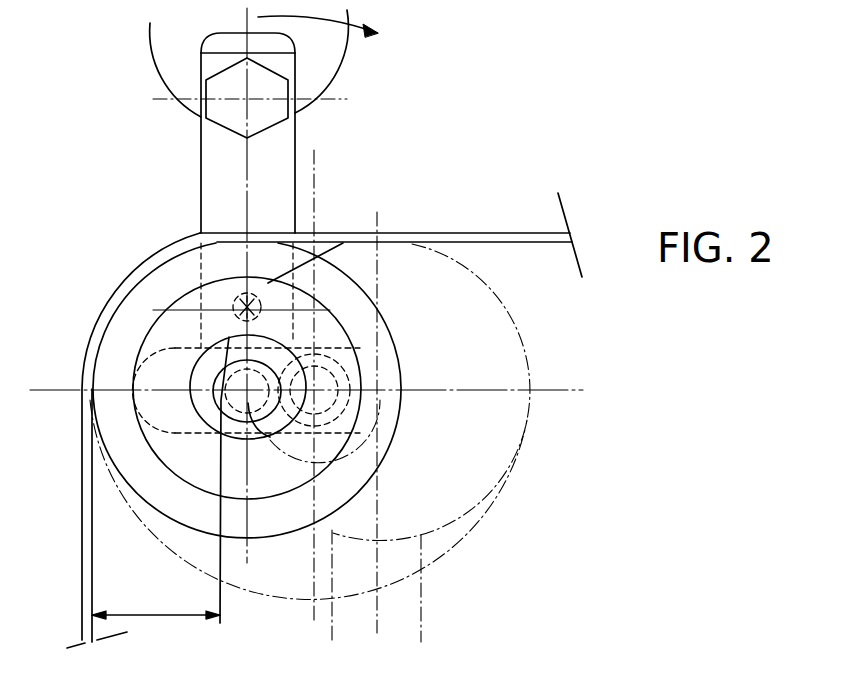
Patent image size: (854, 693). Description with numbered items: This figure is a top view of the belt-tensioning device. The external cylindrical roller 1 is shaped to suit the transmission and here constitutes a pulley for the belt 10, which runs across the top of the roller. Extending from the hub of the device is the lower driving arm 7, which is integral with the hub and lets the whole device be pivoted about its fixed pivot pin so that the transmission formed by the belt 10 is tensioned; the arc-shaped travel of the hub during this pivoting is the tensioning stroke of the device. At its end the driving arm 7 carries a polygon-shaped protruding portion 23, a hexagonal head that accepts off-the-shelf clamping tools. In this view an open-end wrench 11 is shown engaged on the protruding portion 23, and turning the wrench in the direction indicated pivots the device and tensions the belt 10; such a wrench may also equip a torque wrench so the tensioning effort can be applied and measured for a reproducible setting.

The external cylindrical roller 1 is at (335, 284).
The lower driving arm 7 is at (234, 183).
The belt 10 is at (463, 235).
The open-end wrench 11 is at (178, 46).
The polygon-shaped protruding portion 23 is at (237, 117).